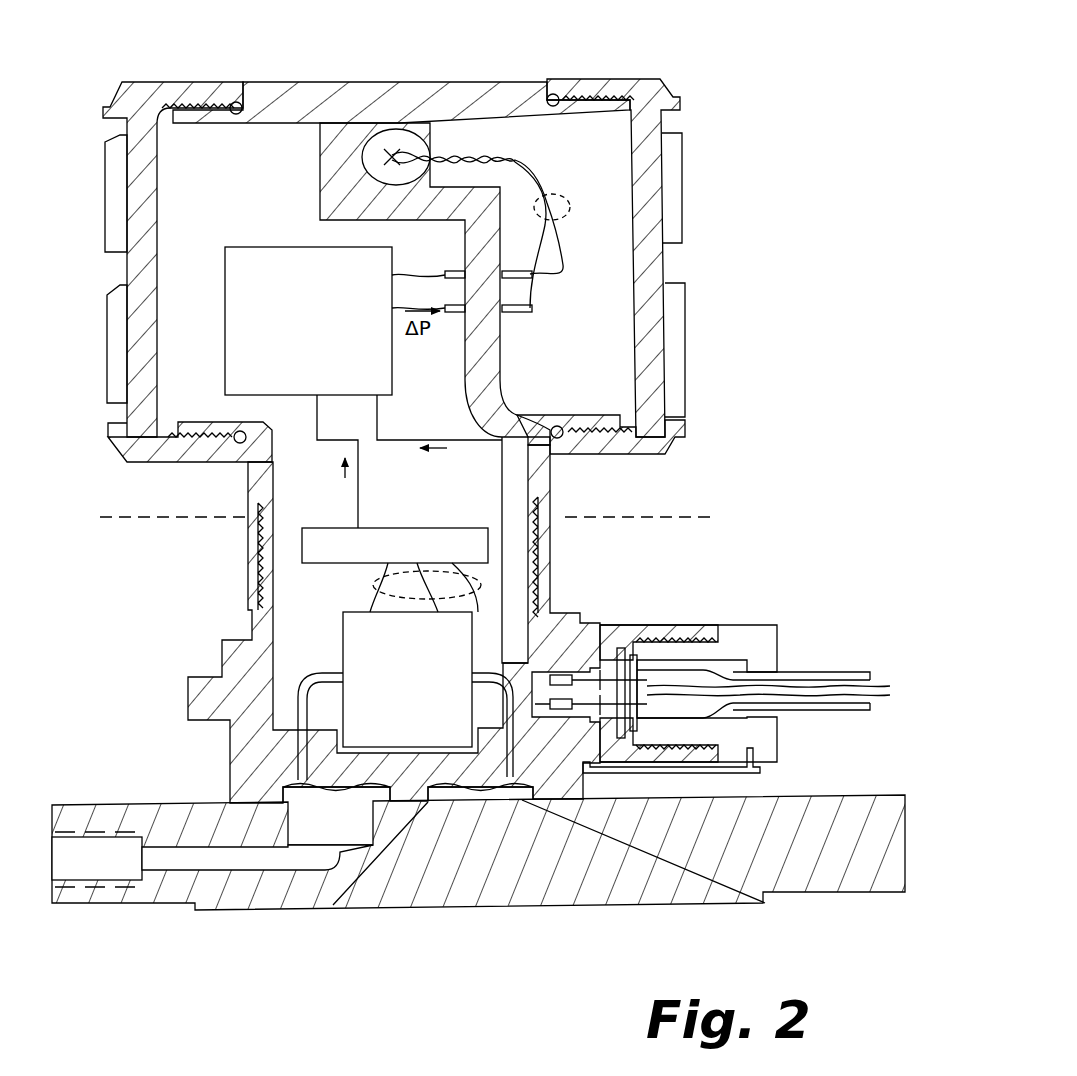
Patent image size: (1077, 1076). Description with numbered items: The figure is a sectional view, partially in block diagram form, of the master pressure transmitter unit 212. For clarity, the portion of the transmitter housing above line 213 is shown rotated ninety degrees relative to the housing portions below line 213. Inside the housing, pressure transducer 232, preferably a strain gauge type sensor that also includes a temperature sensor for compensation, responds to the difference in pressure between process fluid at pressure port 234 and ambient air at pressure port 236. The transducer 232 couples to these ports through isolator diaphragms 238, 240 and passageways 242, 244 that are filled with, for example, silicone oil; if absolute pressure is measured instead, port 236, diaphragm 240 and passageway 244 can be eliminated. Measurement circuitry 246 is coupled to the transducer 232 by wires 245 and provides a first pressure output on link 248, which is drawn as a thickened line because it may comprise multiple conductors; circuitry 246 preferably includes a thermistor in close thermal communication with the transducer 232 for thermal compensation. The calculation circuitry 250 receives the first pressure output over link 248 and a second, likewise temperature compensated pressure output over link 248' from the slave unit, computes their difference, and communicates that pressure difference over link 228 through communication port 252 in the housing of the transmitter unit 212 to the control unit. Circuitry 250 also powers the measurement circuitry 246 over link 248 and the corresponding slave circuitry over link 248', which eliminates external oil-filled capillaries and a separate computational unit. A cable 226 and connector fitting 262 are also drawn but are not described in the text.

The master pressure transmitter unit 212 is at (708, 70).
The line 213 is at (401, 518).
The cable 226 is at (785, 672).
The link 228 is at (555, 195).
The pressure transducer 232 is at (407, 679).
The pressure port 234 is at (482, 882).
The pressure port 236 is at (82, 865).
The isolator diaphragm 238 is at (507, 802).
The isolator diaphragm 240 is at (343, 790).
The passageway 242 is at (520, 748).
The passageway 244 is at (297, 743).
The wires 245 is at (375, 582).
The measurement circuitry 246 is at (395, 545).
The link 248 is at (409, 461).
The link 248' is at (480, 550).
The ΔP calculation circuitry 250 is at (308, 321).
The communication port 252 is at (395, 128).
The connector fitting 262 is at (630, 624).